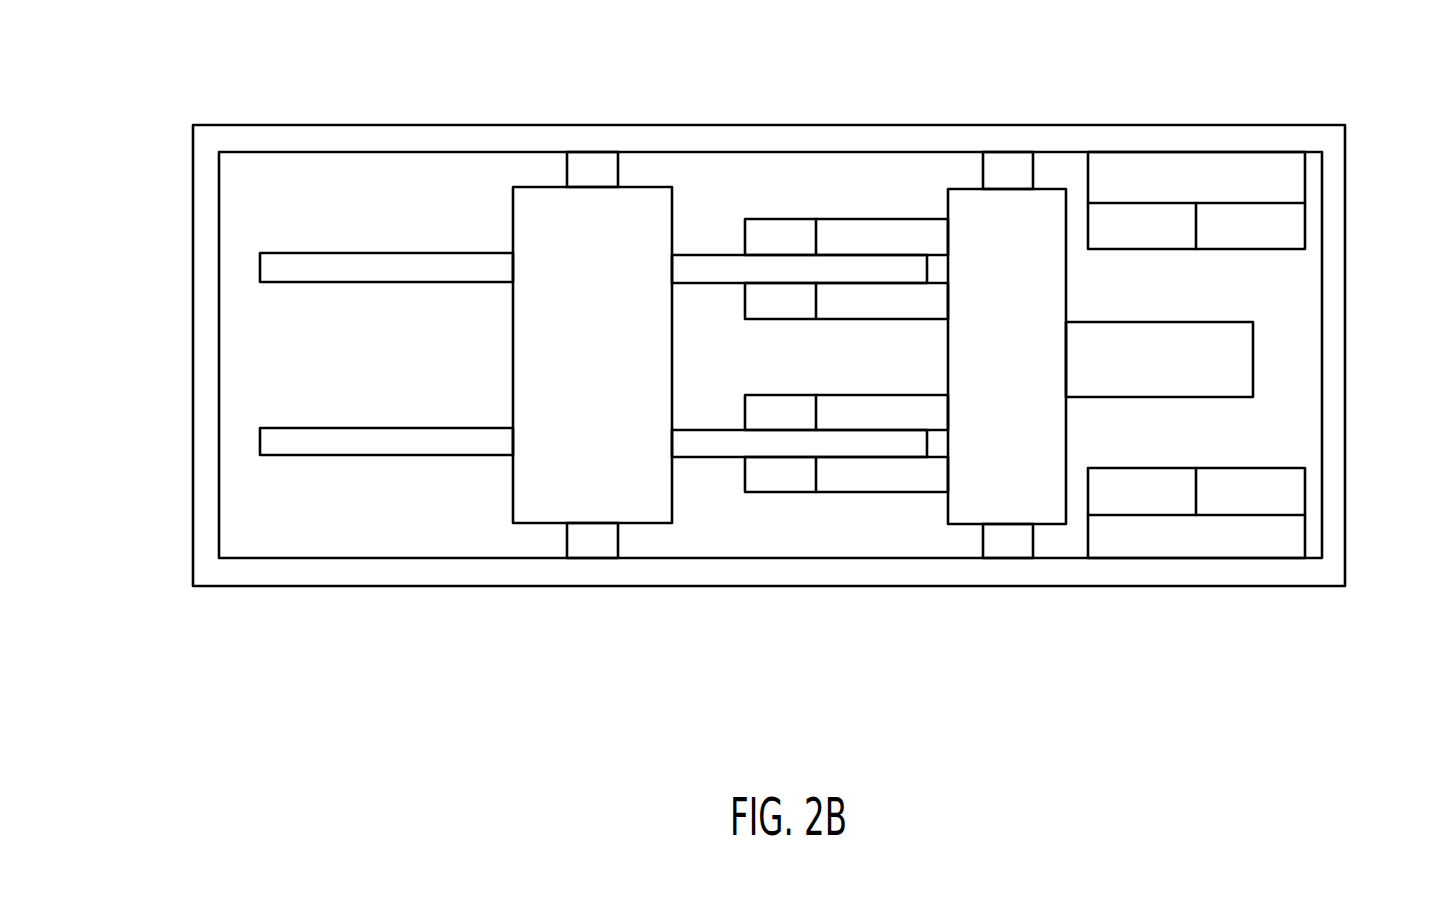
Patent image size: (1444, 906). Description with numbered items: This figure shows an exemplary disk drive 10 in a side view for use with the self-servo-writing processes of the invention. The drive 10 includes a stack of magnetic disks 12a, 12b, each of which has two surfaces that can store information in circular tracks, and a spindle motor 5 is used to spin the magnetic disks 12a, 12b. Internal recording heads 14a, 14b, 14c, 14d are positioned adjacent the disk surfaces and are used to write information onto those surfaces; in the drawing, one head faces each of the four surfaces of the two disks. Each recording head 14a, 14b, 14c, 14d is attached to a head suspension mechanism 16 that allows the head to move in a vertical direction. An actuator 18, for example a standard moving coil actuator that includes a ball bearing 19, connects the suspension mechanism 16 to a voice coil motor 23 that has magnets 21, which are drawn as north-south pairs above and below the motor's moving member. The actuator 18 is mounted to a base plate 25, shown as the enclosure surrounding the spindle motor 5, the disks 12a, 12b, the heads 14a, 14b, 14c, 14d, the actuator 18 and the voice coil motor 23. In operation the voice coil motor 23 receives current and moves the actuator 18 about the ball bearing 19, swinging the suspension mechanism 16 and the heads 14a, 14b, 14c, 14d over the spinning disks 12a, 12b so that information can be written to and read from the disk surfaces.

The spindle motor 5 is at (528, 220).
The drive 10 is at (406, 665).
The magnetic disk 12a is at (401, 253).
The magnetic disk 12b is at (260, 440).
The internal recording head 14a is at (792, 240).
The internal recording head 14b is at (758, 297).
The internal recording head 14c is at (760, 419).
The internal recording head 14d is at (779, 479).
The head suspension mechanism 16 is at (902, 218).
The actuator 18 is at (1054, 537).
The ball bearing 19 is at (1006, 543).
The magnets 21 is at (1305, 225).
The voice coil motor 23 is at (1303, 358).
The base plate 25 is at (479, 596).